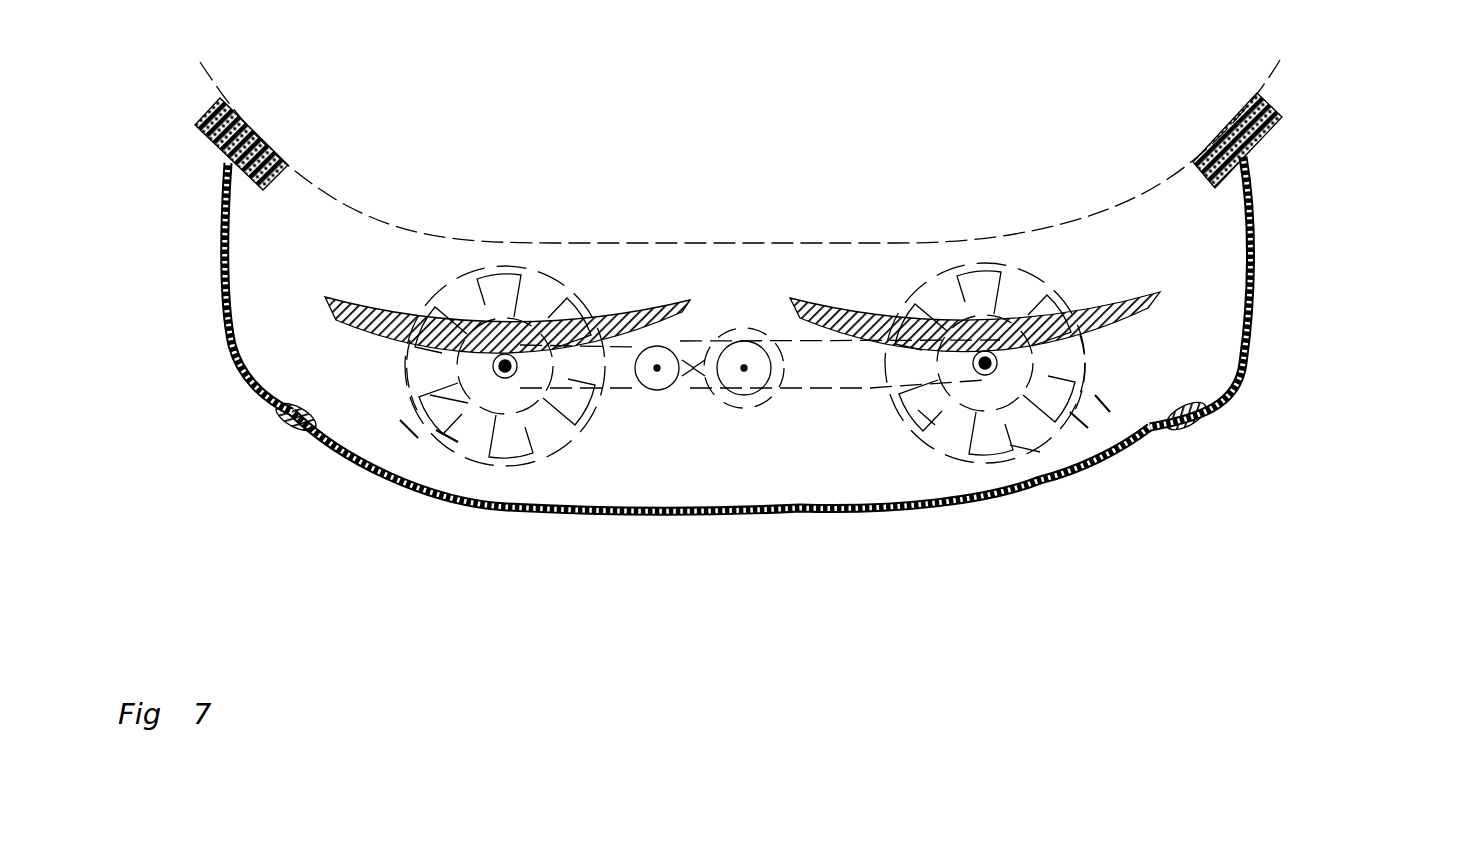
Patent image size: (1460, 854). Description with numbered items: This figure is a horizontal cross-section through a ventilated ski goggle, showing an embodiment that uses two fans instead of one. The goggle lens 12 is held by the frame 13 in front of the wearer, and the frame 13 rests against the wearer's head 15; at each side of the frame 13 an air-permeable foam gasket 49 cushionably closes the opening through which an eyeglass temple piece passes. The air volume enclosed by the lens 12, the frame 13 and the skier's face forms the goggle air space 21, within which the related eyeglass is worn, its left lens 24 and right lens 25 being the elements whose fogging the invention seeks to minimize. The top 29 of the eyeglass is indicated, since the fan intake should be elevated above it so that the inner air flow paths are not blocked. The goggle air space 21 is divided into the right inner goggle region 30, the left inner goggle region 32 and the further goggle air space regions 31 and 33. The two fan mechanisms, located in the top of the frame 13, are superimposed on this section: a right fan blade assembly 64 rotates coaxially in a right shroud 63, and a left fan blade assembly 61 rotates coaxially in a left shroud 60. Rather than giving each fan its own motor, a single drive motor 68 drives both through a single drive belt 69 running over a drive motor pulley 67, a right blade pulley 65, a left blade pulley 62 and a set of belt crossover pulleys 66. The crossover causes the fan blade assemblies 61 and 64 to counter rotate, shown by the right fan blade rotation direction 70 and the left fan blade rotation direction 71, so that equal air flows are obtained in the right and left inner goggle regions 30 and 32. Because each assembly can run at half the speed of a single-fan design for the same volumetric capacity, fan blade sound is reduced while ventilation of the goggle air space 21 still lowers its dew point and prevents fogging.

The lens 12 is at (737, 518).
The frame 13 is at (215, 268).
The head 15 is at (318, 178).
The goggle air space 21 is at (1108, 405).
The left lens 24 is at (1152, 312).
The right lens 25 is at (414, 298).
The top of eyeglass 29 is at (842, 257).
The right inner goggle region 30 is at (505, 361).
The goggle air space region 31 is at (381, 375).
The left inner goggle region 32 is at (1026, 351).
The goggle air space region 33 is at (1111, 372).
The foam gasket 49 is at (1290, 115).
The left shroud 60 is at (1026, 448).
The left fan blade assembly 61 is at (930, 420).
The left blade pulley 62 is at (1012, 336).
The right shroud 63 is at (445, 445).
The right fan blade assembly 64 is at (445, 402).
The right blade pulley 65 is at (507, 382).
The belt crossover pulleys 66 is at (670, 350).
The drive motor pulley 67 is at (758, 380).
The drive motor 68 is at (735, 412).
The drive belt 69 is at (820, 394).
The right fan blade rotation direction 70 is at (403, 430).
The left fan blade rotation direction 71 is at (1082, 423).